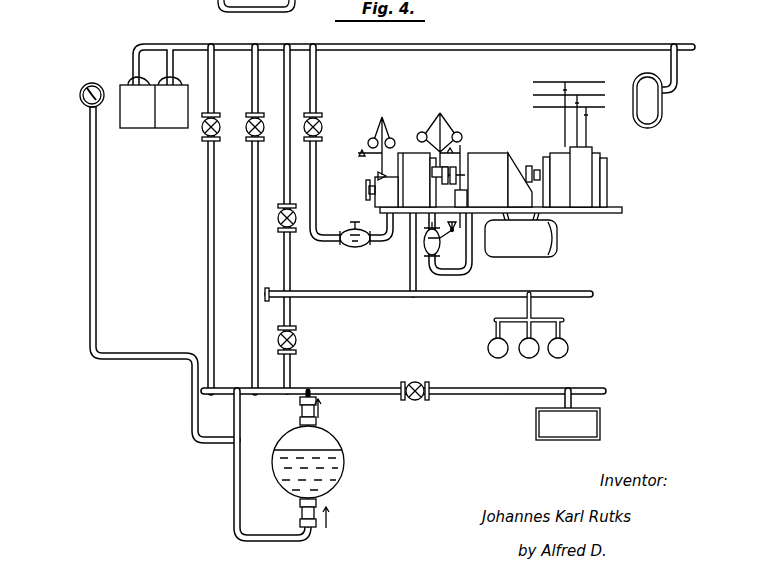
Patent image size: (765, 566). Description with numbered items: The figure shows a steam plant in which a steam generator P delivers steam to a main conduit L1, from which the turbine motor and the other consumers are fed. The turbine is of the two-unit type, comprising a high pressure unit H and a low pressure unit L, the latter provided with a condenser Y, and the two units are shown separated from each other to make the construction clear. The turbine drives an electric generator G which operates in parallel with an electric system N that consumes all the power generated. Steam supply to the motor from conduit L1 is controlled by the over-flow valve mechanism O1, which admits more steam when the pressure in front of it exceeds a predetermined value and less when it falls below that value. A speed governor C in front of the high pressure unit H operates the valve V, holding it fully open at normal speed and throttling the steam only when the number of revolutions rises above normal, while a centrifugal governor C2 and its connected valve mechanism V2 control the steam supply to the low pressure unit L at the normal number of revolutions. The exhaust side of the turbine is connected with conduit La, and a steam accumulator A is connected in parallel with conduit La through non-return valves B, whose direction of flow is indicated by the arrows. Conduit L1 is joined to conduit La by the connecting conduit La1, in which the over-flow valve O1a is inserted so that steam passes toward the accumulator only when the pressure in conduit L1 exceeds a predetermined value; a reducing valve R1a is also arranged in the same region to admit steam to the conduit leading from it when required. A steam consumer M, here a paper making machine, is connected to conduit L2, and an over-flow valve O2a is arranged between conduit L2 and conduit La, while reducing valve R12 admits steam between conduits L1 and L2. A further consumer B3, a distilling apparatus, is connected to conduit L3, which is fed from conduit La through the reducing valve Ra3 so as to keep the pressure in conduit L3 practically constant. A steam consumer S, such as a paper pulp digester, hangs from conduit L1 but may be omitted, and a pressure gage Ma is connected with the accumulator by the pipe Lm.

The conduit L1 is at (452, 52).
The connecting conduit La1 is at (207, 235).
The conduit L2 is at (433, 299).
The conduit L3 is at (459, 386).
The pipe Lm is at (97, 235).
The conduit La is at (228, 388).
The pressure gage Ma is at (96, 79).
The generator P is at (142, 131).
The over-flow valve O1a is at (200, 134).
The reducing valve R1a is at (247, 134).
The valve mechanism O1 is at (319, 118).
The reducing valve R12 is at (295, 226).
The over-flow valve O2a is at (297, 336).
The reducing valve Ra3 is at (414, 381).
The valve mechanism V is at (354, 247).
The valve mechanism V2 is at (426, 241).
The high pressure unit H is at (413, 156).
The speed governor C is at (382, 117).
The centrifugal governor C2 is at (442, 116).
The low pressure unit L is at (491, 154).
The electric generator G is at (598, 164).
The electric system N is at (569, 103).
The steam consumer S is at (663, 100).
The condenser Y is at (529, 235).
The steam consumer M is at (528, 358).
The steam consumer B3 is at (537, 431).
The steam accumulator A is at (336, 432).
The non-return valves B is at (296, 464).